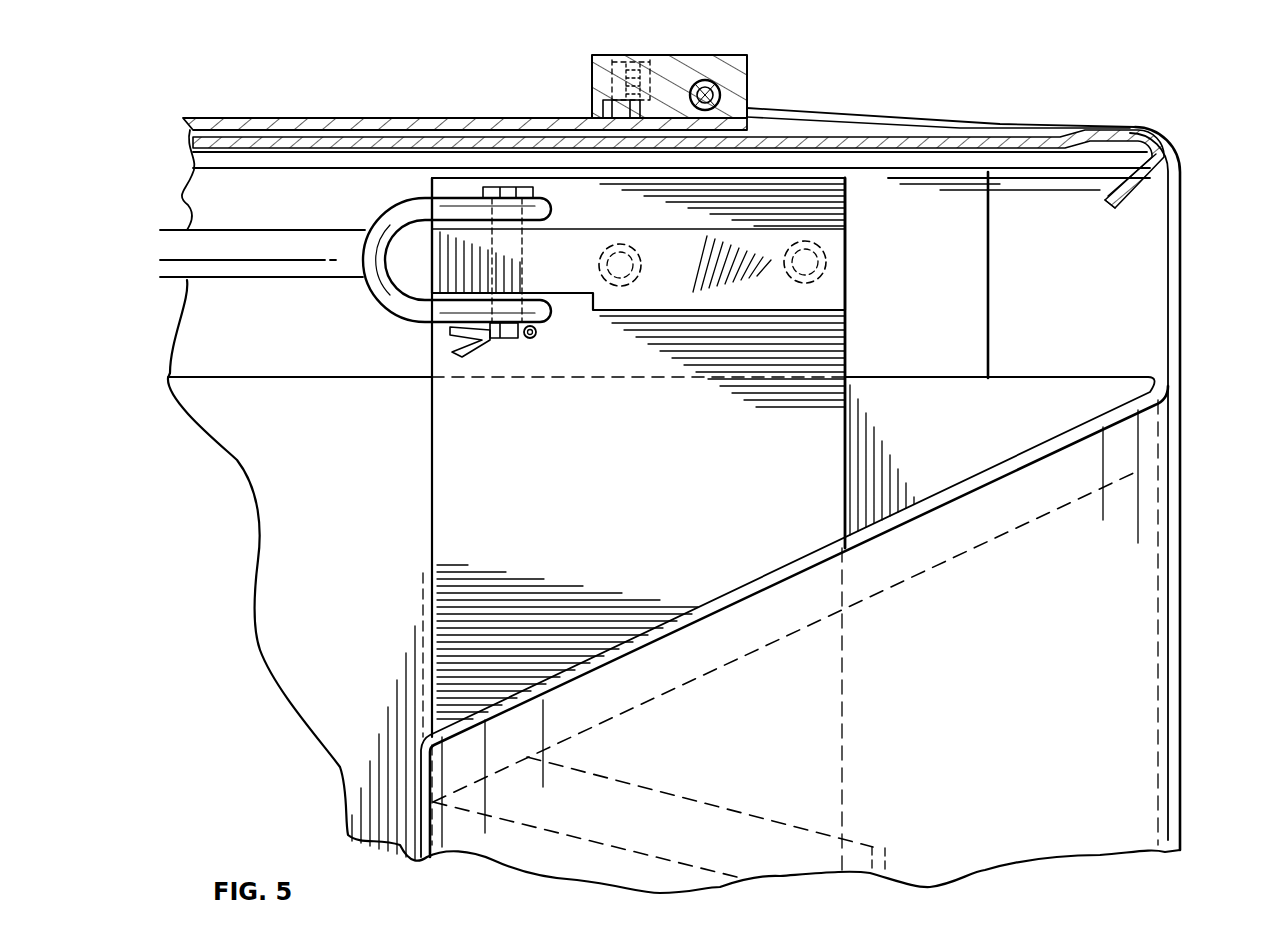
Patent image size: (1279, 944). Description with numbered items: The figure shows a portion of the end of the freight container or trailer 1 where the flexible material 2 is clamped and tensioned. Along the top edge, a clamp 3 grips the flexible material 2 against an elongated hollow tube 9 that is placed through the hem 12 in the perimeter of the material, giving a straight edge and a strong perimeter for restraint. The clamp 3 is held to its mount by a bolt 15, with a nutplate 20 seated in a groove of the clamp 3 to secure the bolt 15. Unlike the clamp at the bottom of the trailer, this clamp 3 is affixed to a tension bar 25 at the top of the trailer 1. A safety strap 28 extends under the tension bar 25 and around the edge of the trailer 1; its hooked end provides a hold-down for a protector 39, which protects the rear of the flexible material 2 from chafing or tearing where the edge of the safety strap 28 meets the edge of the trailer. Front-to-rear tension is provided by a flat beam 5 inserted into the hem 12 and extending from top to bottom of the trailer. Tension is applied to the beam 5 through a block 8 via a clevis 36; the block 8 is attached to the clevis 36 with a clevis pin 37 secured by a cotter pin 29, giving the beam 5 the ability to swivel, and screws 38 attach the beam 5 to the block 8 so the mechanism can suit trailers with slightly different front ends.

The trailer 1 is at (190, 172).
The flexible material 2 is at (905, 127).
The clamp 3 is at (748, 60).
The flat beam 5 is at (432, 490).
The block 8 is at (835, 294).
The hollow tube 9 is at (722, 90).
The hem 12 is at (760, 108).
The bolt 15 is at (652, 62).
The nutplate 20 is at (600, 108).
The tension bar 25 is at (368, 118).
The safety strap 28 is at (955, 142).
The cotter pin 29 is at (448, 338).
The clevis 36 is at (372, 300).
The clevis pin 37 is at (522, 334).
The screw 38 is at (612, 245).
The protector 39 is at (1108, 206).